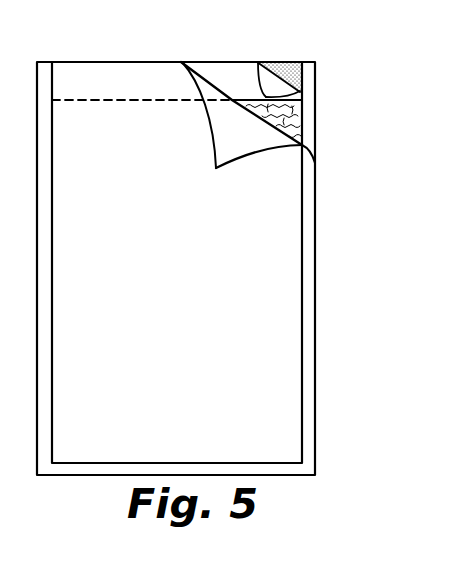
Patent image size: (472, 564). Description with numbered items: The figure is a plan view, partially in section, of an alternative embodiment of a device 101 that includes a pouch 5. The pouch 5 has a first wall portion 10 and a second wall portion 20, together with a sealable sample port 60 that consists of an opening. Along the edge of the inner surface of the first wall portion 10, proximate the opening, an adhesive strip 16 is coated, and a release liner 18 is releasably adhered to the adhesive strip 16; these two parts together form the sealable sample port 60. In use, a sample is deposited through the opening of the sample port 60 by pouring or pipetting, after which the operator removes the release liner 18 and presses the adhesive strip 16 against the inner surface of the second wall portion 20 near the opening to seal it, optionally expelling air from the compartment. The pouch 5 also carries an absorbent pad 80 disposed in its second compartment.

The device 101 is at (388, 57).
The first wall portion 10 is at (315, 67).
The pouch 5 is at (312, 213).
The adhesive strip 16 is at (287, 66).
The release liner 18 is at (204, 70).
The sealable sample port 60 is at (215, 83).
The second wall portion 20 is at (233, 155).
The absorbent pad 80 is at (297, 114).